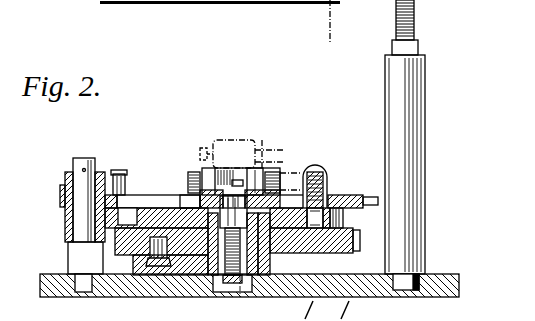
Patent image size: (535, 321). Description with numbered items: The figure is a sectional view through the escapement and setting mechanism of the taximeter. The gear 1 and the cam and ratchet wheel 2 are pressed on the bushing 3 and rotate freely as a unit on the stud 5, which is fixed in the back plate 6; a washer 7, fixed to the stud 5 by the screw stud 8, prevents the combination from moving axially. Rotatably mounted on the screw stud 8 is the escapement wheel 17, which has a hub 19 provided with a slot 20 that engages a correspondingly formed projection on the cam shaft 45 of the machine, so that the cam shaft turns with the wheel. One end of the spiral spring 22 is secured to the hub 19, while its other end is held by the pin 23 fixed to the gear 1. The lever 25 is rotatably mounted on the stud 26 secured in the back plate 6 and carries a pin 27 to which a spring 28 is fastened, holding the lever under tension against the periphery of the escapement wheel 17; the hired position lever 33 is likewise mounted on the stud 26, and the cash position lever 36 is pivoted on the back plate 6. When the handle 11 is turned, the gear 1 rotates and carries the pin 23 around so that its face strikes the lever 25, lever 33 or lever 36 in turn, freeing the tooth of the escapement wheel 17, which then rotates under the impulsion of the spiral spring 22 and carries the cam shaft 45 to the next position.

The gear 1 is at (348, 216).
The cam and ratchet wheel 2 is at (357, 240).
The bushing 3 is at (266, 258).
The stud 5 is at (239, 290).
The back plate 6 is at (445, 274).
The washer 7 is at (180, 208).
The screw stud 8 is at (226, 196).
The handle 11 is at (318, 31).
The escapement wheel 17 is at (183, 194).
The hub 19 is at (215, 167).
The slot 20 is at (230, 168).
The spiral spring 22 is at (287, 172).
The pin 23 is at (322, 170).
The lever 25 is at (139, 195).
The stud 26 is at (82, 158).
The pin 27 is at (118, 170).
The spring 28 is at (99, 172).
The hired position lever 33 is at (60, 190).
The cash position lever 36 is at (348, 195).
The cam shaft 45 is at (232, 143).